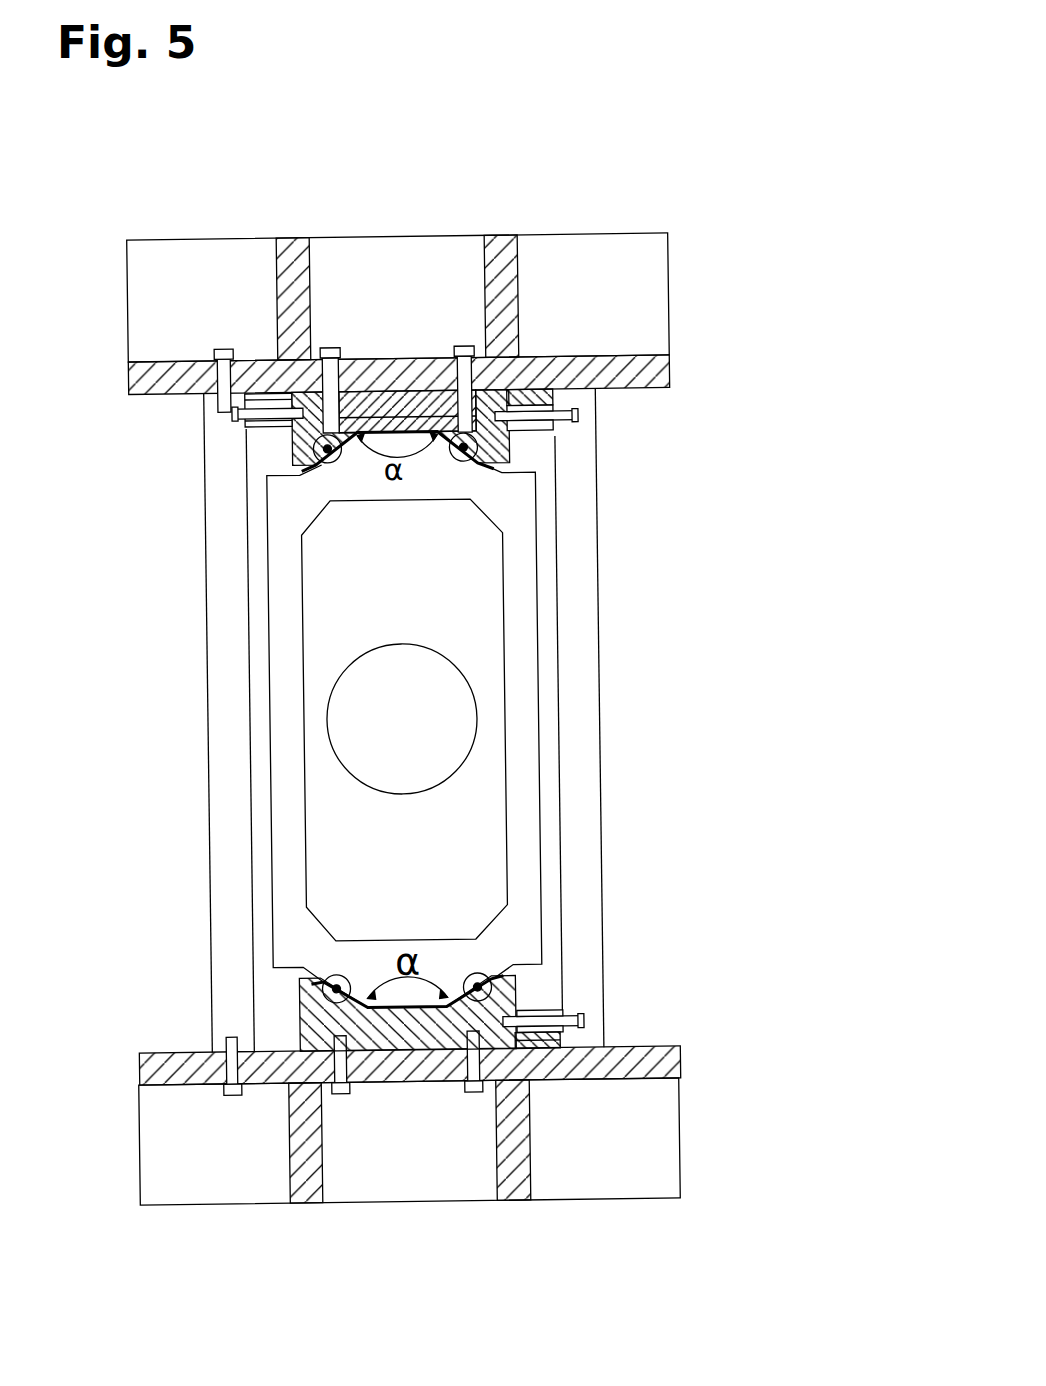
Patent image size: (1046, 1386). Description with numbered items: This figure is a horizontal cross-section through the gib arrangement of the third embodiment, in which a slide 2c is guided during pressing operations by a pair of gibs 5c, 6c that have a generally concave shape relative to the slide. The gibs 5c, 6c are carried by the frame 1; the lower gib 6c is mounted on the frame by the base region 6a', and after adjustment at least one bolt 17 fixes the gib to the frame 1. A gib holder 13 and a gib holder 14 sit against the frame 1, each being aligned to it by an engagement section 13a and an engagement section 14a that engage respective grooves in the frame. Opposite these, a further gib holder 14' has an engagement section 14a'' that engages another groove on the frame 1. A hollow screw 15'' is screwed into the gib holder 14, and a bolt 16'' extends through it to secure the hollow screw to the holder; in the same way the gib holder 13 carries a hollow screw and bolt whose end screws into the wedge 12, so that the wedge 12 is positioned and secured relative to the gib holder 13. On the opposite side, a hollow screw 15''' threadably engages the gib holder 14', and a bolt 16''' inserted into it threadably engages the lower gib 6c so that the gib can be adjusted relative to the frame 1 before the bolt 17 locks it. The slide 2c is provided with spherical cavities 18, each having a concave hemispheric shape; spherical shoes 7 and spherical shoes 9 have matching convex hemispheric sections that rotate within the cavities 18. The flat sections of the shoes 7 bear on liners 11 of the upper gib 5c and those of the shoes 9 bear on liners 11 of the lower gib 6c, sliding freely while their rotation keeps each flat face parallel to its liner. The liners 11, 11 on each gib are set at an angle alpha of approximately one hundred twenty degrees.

The frame 1 is at (503, 292).
The slide 2c is at (520, 628).
The gib 5c is at (422, 420).
The lower base plate 6a' is at (409, 1148).
The gib 6c is at (393, 1033).
The spherical shoe 7 is at (470, 465).
The spherical shoe 9 is at (481, 981).
The liner 11 is at (466, 460).
The wedge 12 is at (393, 400).
The gib holder 13 is at (282, 395).
The engagement section 13a is at (263, 393).
The gib holder 14 is at (544, 298).
The engagement section 14a is at (636, 343).
The gib holder 14' is at (640, 1019).
The engagement section 14a'' is at (646, 1070).
The hollow screw 15'' is at (631, 393).
The hollow screw 15''' is at (639, 956).
The bolt 16'' is at (637, 441).
The bolt 16''' is at (646, 985).
The bolt 17 is at (330, 353).
The spherical cavity 18 is at (476, 470).